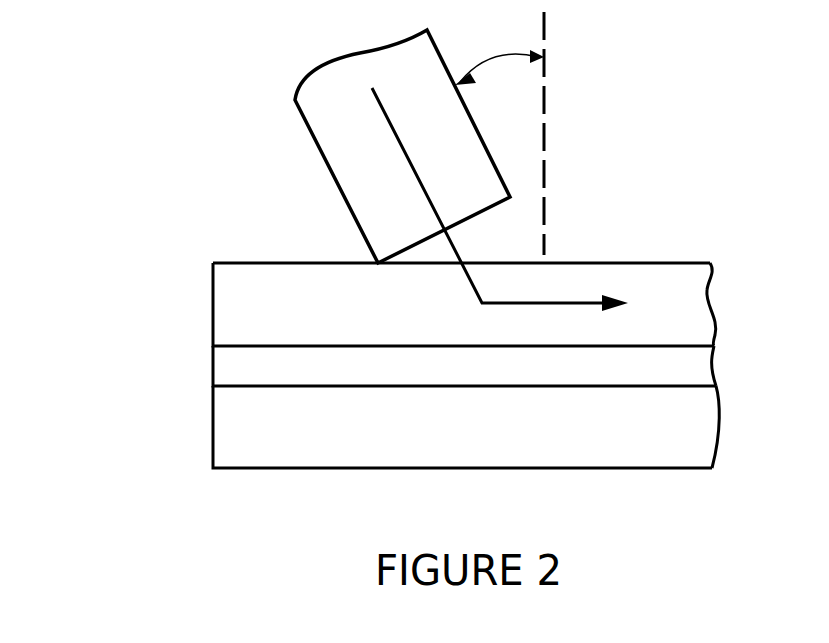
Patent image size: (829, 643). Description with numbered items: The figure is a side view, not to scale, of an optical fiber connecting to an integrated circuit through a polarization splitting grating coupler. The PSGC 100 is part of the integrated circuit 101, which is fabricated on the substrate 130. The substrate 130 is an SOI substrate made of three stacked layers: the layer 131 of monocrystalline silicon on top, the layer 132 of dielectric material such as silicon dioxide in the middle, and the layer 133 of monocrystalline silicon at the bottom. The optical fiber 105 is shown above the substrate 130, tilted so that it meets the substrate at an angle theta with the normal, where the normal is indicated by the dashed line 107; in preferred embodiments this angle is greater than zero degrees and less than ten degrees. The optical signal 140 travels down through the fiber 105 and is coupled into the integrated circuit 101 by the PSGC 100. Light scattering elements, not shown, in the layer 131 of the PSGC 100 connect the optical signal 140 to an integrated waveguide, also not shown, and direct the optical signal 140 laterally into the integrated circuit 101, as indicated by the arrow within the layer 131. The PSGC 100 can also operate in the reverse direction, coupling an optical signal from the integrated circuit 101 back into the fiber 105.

The polarization splitting grating coupler (PSGC) 100 is at (588, 207).
The integrated circuit 101 is at (182, 240).
The optical fiber 105 is at (398, 191).
The normal line 107 is at (545, 90).
The substrate 130 is at (172, 367).
The monocrystalline silicon layer 131 is at (287, 316).
The dielectric layer 132 is at (287, 377).
The monocrystalline silicon layer 133 is at (287, 439).
The optical signal 140 is at (390, 133).